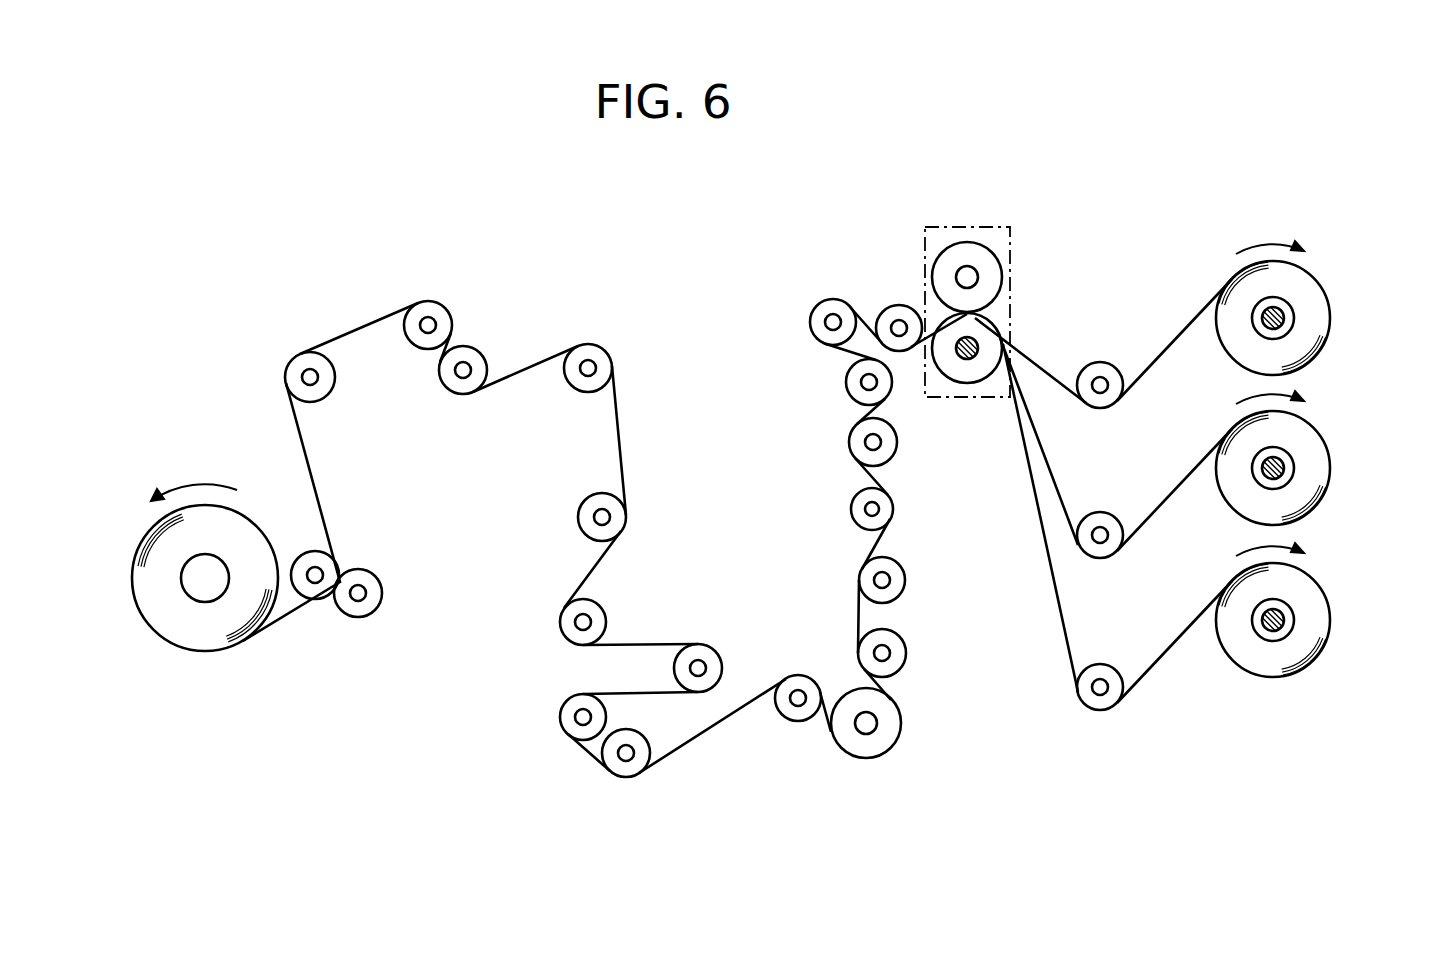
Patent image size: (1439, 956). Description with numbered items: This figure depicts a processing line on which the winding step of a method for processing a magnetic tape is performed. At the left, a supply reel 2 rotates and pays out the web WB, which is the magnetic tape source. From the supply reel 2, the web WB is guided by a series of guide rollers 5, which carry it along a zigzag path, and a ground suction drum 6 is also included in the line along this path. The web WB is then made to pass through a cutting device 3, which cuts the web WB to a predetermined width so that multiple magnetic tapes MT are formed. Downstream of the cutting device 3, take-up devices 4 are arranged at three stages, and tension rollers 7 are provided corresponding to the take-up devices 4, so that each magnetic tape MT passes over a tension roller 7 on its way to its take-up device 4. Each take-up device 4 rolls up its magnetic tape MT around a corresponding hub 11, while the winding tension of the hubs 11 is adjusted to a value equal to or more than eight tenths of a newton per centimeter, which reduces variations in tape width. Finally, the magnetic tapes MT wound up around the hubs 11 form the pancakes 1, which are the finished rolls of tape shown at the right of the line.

The pancake 1 is at (1330, 325).
The supply reel 2 is at (197, 604).
The cutting device 3 is at (1012, 275).
The take-up device 4 is at (1318, 266).
The guide roller 5 is at (320, 398).
The ground suction drum 6 is at (851, 689).
The tension roller 7 is at (1097, 362).
The hub 11 is at (1291, 301).
The web WB is at (214, 652).
The magnetic tape MT is at (1180, 334).